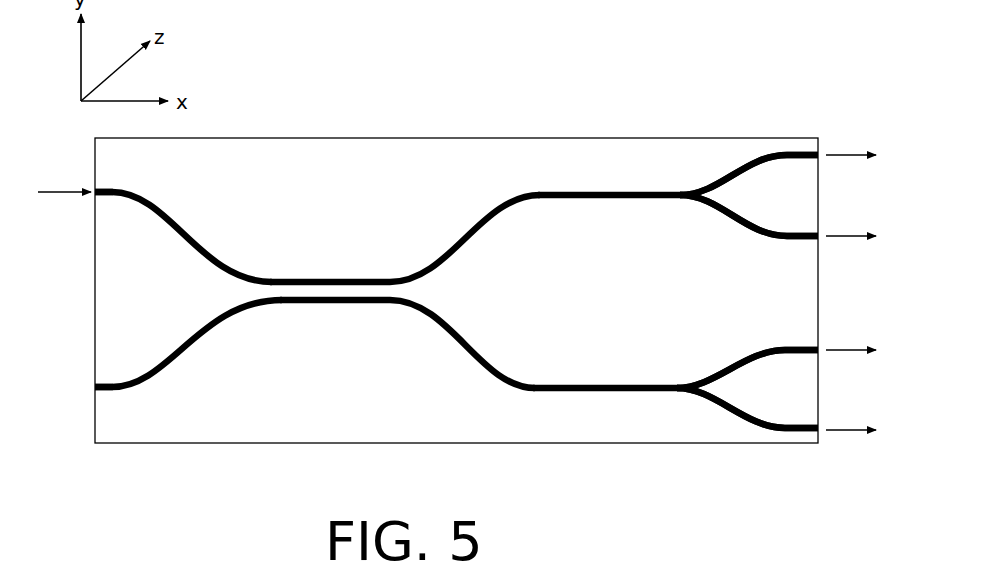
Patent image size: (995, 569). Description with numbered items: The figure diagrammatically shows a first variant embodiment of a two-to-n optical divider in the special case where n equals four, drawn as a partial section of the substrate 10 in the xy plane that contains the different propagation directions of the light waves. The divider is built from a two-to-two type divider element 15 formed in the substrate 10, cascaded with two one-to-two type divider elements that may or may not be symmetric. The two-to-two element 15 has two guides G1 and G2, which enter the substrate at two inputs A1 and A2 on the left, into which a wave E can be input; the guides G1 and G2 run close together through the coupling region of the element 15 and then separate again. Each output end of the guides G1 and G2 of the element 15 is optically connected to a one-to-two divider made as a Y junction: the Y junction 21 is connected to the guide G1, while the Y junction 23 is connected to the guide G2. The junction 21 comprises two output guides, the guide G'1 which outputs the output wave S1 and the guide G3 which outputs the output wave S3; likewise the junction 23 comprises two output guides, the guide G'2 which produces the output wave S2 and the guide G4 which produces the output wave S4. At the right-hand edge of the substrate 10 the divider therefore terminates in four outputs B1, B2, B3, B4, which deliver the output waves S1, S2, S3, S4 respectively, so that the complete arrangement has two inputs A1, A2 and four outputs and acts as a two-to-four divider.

The substrate 10 is at (352, 154).
The 2 to 2 type divider element 15 is at (357, 249).
The Y junction 21 is at (640, 185).
The Y junction 23 is at (652, 400).
The guide G1 is at (184, 232).
The guide G2 is at (182, 342).
The output guide G3 is at (720, 218).
The output guide G4 is at (720, 360).
The output guide G'1 is at (726, 137).
The output guide G'2 is at (723, 440).
The input A1 is at (98, 196).
The input A2 is at (98, 392).
The output B1 is at (806, 152).
The output B2 is at (808, 432).
The output B3 is at (810, 240).
The output B4 is at (812, 348).
The input wave E is at (64, 178).
The output wave S1 is at (851, 139).
The output wave S2 is at (851, 414).
The output wave S3 is at (851, 219).
The output wave S4 is at (851, 333).